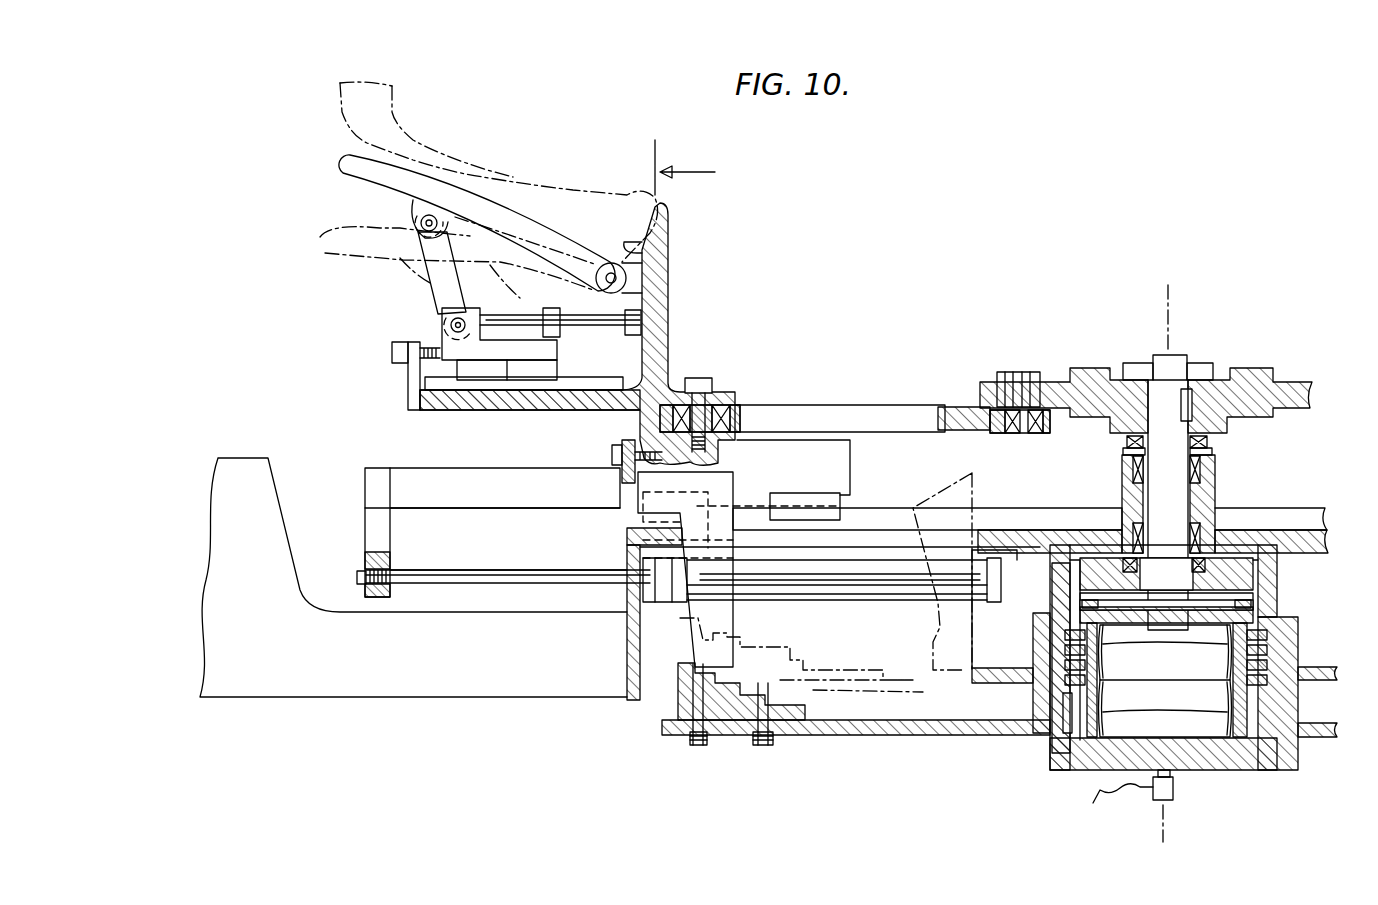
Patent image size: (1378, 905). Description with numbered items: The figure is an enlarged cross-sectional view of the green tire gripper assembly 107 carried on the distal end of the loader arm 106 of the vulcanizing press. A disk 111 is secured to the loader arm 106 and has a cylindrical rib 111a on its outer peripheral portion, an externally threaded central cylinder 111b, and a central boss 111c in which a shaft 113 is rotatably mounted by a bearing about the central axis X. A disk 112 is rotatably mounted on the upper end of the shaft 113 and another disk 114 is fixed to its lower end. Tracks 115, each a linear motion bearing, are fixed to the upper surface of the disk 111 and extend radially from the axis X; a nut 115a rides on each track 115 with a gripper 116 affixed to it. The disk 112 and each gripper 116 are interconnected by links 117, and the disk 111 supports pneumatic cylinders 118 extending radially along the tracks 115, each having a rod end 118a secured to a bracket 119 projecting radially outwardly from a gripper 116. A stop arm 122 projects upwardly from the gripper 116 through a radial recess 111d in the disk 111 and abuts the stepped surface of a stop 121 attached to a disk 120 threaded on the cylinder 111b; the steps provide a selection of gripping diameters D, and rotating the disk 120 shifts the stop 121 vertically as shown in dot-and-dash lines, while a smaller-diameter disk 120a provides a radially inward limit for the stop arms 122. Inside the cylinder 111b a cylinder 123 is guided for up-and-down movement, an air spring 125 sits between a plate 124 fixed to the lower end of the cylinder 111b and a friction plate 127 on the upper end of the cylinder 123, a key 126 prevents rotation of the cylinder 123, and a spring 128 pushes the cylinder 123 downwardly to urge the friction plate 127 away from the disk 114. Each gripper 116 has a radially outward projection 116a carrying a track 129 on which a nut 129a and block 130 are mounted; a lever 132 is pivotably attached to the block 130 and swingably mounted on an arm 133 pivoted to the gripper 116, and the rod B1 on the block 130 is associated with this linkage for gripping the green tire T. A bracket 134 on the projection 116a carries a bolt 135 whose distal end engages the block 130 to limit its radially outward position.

The loader arm 106 is at (360, 697).
The gripper assembly 107 is at (1034, 342).
The disk 111 is at (622, 540).
The cylindrical rib 111a is at (627, 650).
The central cylinder 111b is at (1055, 753).
The central boss 111c is at (1213, 470).
The radial recess 111d is at (835, 537).
The disk 112 is at (1230, 420).
The shaft 113 is at (1205, 495).
The disk 114 is at (1277, 565).
The track 115 is at (1052, 508).
The nut 115a is at (838, 510).
The gripper 116 is at (655, 370).
The radially outward projection 116a is at (595, 410).
The link 117 is at (878, 405).
The pneumatic cylinder 118 is at (843, 602).
The rod end 118a is at (405, 588).
The bracket 119 is at (480, 510).
The disk 120 is at (942, 735).
The smaller-diameter disk 120a is at (1003, 668).
The stop 121 is at (672, 705).
The stop arm 122 is at (733, 618).
The cylinder 123 is at (1230, 705).
The plate 124 is at (1215, 770).
The air spring 125 is at (1097, 655).
The key 126 is at (1063, 708).
The friction plate 127 is at (1253, 600).
The spring 128 is at (1290, 660).
The track 129 is at (598, 383).
The nut 129a is at (490, 380).
The block 130 is at (470, 308).
The lever 132 is at (405, 262).
The arm 133 is at (517, 233).
The bracket 134 is at (405, 395).
The bolt 135 is at (392, 352).
The tool T is at (482, 168).
The rod B1 is at (578, 318).
The gripping diameter D is at (685, 167).
The central axis X is at (1165, 562).